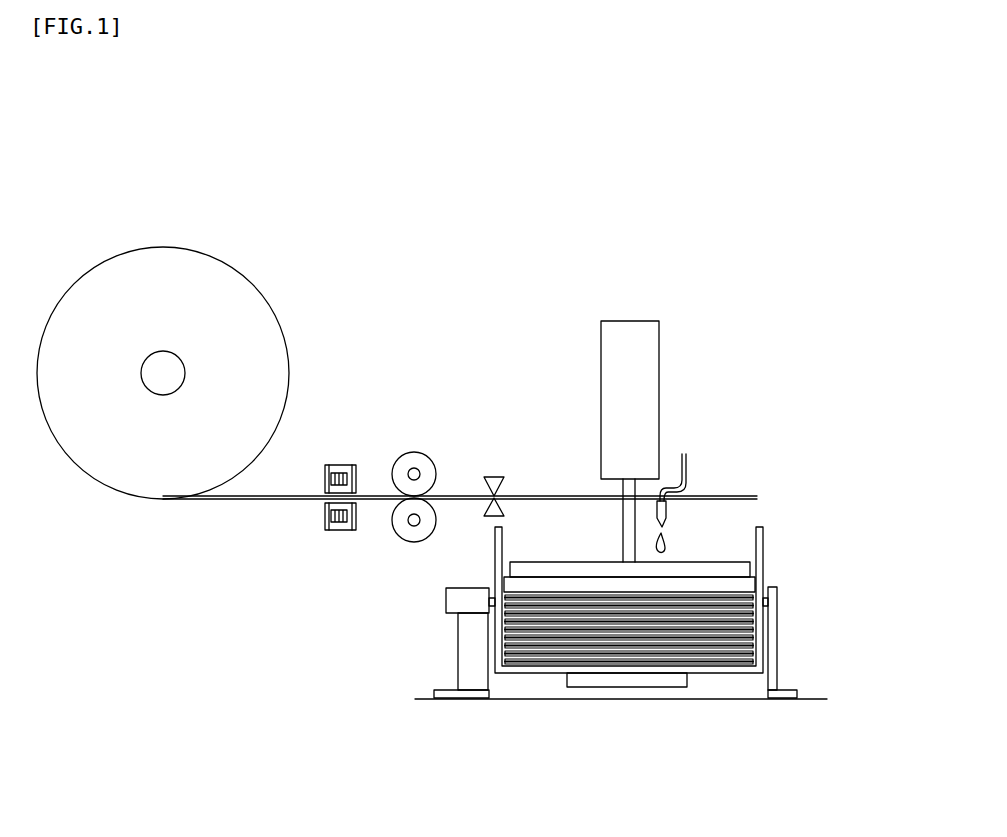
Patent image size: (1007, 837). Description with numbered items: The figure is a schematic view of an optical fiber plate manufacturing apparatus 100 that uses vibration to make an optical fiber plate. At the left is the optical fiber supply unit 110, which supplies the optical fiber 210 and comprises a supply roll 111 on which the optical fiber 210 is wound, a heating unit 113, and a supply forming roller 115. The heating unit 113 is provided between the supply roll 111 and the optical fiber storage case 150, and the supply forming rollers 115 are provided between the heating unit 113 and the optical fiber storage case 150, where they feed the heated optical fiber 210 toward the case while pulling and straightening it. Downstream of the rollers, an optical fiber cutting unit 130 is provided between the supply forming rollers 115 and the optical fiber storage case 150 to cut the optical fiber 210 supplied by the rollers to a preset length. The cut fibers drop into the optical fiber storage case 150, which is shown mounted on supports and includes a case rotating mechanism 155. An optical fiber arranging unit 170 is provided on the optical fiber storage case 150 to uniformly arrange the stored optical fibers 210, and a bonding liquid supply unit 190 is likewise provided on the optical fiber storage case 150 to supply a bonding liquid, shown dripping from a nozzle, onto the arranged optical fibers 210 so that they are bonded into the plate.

The optical fiber plate manufacturing apparatus 100 is at (533, 223).
The optical fiber supply unit 110 is at (437, 360).
The supply roll 111 is at (233, 303).
The heating unit 113 is at (332, 462).
The supply forming roller 115 is at (413, 460).
The optical fiber cutting unit 130 is at (500, 463).
The optical fiber storage case 150 is at (722, 670).
The case rotating mechanism 155 is at (450, 603).
The optical fiber arranging unit 170 is at (670, 410).
The bonding liquid supply unit 190 is at (662, 512).
The optical fiber 210 is at (557, 496).